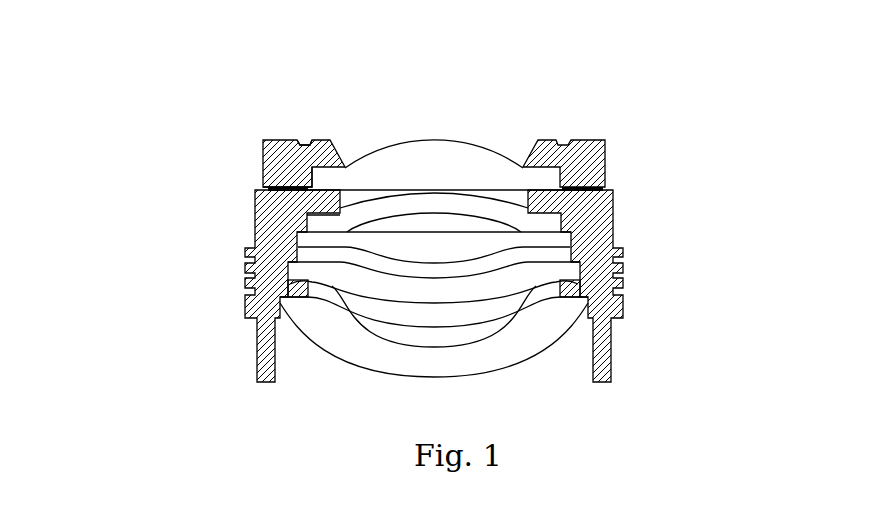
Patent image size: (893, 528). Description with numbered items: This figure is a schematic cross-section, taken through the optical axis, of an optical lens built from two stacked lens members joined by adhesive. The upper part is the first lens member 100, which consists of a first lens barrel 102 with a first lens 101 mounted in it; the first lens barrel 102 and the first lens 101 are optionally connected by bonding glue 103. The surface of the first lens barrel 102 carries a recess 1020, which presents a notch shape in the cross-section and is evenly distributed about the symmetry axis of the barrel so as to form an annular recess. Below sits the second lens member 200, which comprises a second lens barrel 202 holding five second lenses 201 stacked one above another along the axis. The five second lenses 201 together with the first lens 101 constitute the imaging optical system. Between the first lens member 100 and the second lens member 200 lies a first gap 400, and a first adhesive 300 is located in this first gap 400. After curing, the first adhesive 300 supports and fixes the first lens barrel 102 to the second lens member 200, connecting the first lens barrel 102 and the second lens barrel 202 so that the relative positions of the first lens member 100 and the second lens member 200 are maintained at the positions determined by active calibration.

The first lens member 100 is at (606, 149).
The first lens 101 is at (428, 147).
The first lens barrel 102 is at (307, 138).
The bonding glue 103 is at (302, 184).
The recess 1020 is at (560, 184).
The second lenses 201 is at (393, 208).
The second lens member 200 is at (635, 264).
The second lens barrel 202 is at (603, 293).
The first adhesive 300 is at (600, 188).
The first gap 400 is at (270, 188).